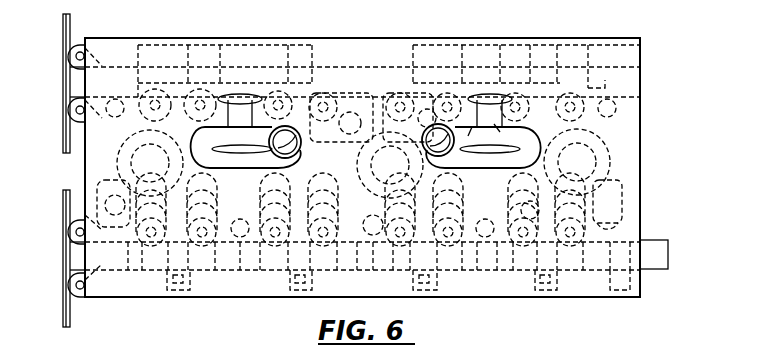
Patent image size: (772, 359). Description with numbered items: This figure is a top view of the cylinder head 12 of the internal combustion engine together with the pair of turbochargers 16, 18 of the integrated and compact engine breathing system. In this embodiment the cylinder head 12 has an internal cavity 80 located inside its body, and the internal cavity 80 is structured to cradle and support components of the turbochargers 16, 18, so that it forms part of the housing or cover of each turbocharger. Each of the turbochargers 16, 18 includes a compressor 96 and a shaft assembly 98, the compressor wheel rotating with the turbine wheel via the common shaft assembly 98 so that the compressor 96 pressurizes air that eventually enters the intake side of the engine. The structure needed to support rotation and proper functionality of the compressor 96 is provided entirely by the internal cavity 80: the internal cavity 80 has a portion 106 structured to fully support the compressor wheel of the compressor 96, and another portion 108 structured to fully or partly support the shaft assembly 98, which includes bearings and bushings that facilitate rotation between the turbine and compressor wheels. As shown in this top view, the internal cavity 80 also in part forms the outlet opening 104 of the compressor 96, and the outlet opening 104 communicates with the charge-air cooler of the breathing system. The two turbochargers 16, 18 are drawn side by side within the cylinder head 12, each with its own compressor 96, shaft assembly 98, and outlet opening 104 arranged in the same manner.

The cylinder head 12 is at (641, 152).
The turbocharger 16 is at (190, 140).
The turbocharger 18 is at (540, 134).
The internal cavity 80 is at (205, 160).
The compressor 96 is at (238, 140).
The shaft assembly 98 is at (236, 108).
The outlet opening 104 is at (301, 147).
The portion 106 is at (480, 162).
The portion 108 is at (493, 125).